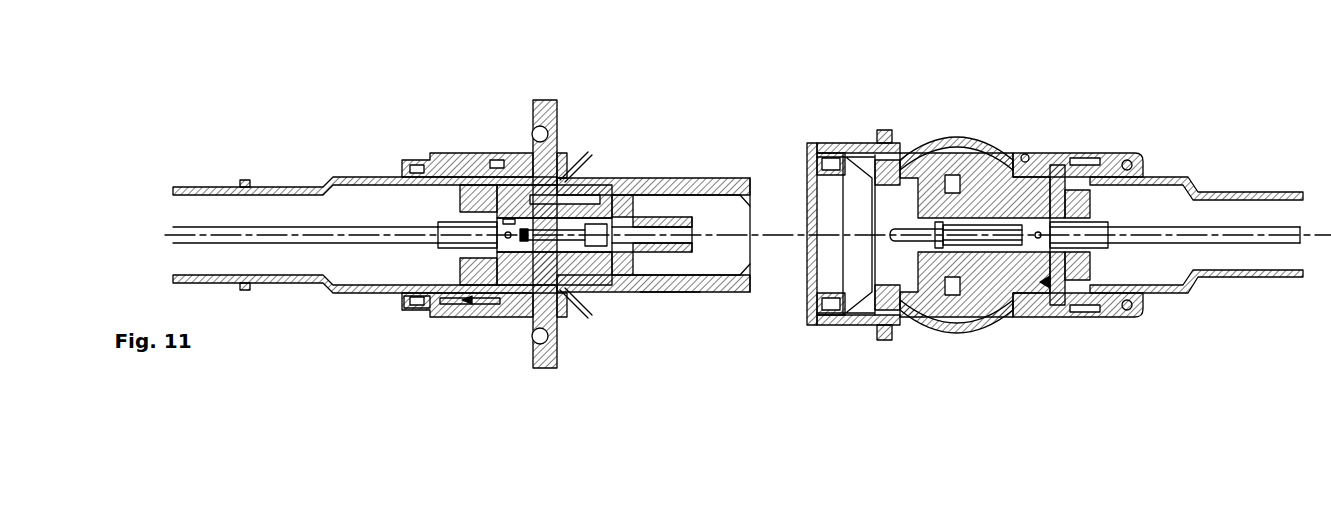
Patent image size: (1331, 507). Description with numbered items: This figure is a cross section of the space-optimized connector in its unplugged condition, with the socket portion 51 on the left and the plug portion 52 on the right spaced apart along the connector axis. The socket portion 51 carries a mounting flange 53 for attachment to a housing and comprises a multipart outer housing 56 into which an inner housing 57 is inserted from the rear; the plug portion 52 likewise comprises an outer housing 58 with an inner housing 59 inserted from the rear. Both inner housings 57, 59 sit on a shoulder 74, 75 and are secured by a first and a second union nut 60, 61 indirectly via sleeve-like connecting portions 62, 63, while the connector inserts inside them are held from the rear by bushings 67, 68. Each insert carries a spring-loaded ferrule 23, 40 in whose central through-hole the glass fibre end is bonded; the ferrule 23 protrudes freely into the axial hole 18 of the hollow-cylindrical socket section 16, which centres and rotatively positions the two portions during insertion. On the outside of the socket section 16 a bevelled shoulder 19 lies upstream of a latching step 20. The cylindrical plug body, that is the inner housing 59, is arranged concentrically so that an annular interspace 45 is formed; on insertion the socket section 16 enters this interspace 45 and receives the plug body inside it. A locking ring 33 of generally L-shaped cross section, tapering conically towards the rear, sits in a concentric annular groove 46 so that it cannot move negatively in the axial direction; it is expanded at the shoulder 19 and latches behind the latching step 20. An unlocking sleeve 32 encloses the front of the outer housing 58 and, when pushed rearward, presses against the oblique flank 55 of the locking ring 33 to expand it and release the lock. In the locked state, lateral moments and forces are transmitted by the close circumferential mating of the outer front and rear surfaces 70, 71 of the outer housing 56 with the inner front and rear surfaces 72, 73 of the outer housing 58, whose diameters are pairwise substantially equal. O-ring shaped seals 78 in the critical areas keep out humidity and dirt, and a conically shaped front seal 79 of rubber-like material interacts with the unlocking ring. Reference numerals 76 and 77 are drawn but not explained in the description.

The socket section 16 is at (654, 195).
The axial hole 18 is at (693, 260).
The bevelled shoulder 19 is at (653, 362).
The latching step 20 is at (545, 333).
The ferrule 23 is at (851, 251).
The unlocking sleeve 32 is at (784, 182).
The locking ring 33 is at (784, 88).
The ferrule 40 is at (681, 284).
The annular interspace 45 is at (813, 230).
The annular groove 46 is at (878, 97).
The socket portion 51 is at (365, 147).
The plug portion 52 is at (954, 159).
The mounting flange 53 is at (483, 274).
The oblique flank 55 is at (874, 288).
The outer housing 56 is at (575, 143).
The inner housing 57 is at (451, 301).
The outer housing 58 is at (971, 167).
The inner housing 59 is at (1094, 318).
The first union nut 60 is at (402, 182).
The second union nut 61 is at (1153, 95).
The sleeve-like connecting portion 62 is at (305, 169).
The sleeve-like connecting portion 63 is at (1153, 194).
The bushing 67 is at (346, 347).
The bushing 68 is at (1176, 312).
The outer front surface 70 is at (695, 369).
The outer rear surface 71 is at (537, 368).
The inner front surface 72 is at (836, 295).
The inner rear surface 73 is at (1030, 306).
The shoulder 74 is at (432, 84).
The shoulder 75 is at (1101, 159).
The chamfer 76 is at (769, 235).
The insulator body 77 is at (987, 126).
The o-ring shaped seal 78 is at (1077, 224).
The front seal 79 is at (580, 91).